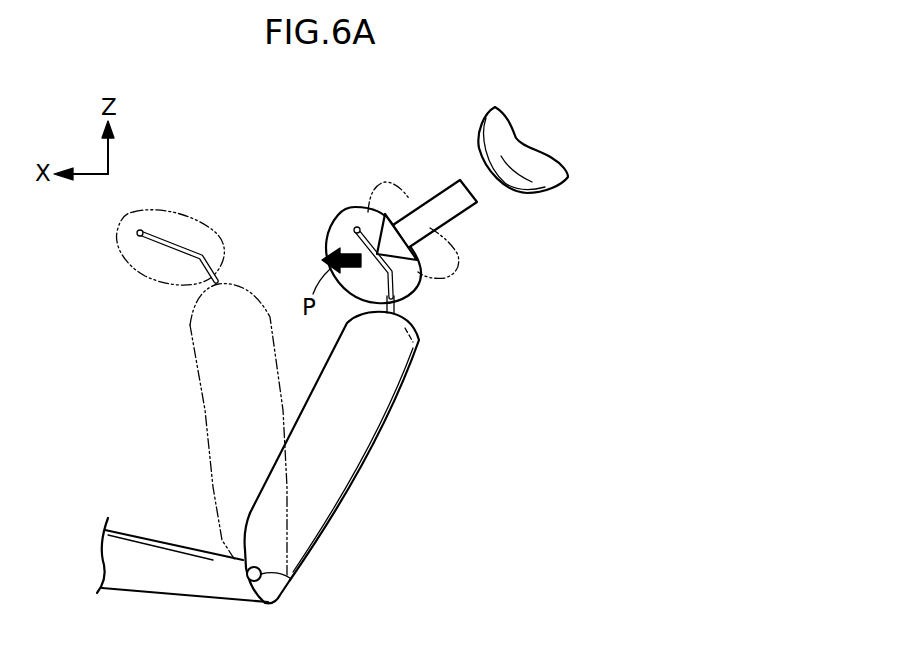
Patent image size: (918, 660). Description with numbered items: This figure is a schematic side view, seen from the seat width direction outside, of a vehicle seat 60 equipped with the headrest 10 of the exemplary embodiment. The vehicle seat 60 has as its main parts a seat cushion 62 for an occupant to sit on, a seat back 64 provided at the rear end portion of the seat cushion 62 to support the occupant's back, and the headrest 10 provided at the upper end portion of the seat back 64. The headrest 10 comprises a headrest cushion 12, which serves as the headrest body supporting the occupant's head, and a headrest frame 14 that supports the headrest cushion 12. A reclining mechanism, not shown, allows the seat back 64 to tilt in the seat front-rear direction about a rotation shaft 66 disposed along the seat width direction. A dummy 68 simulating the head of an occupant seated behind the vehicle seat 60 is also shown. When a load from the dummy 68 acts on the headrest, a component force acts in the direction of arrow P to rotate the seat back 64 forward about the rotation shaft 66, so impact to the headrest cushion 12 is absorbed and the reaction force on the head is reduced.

The headrest 10 is at (260, 217).
The headrest cushion 12 is at (192, 215).
The headrest frame 14 is at (158, 247).
The vehicle seat 60 is at (318, 447).
The seat cushion 62 is at (148, 531).
The seat back 64 is at (200, 380).
The rotation shaft 66 is at (290, 578).
The dummy 68 is at (455, 265).